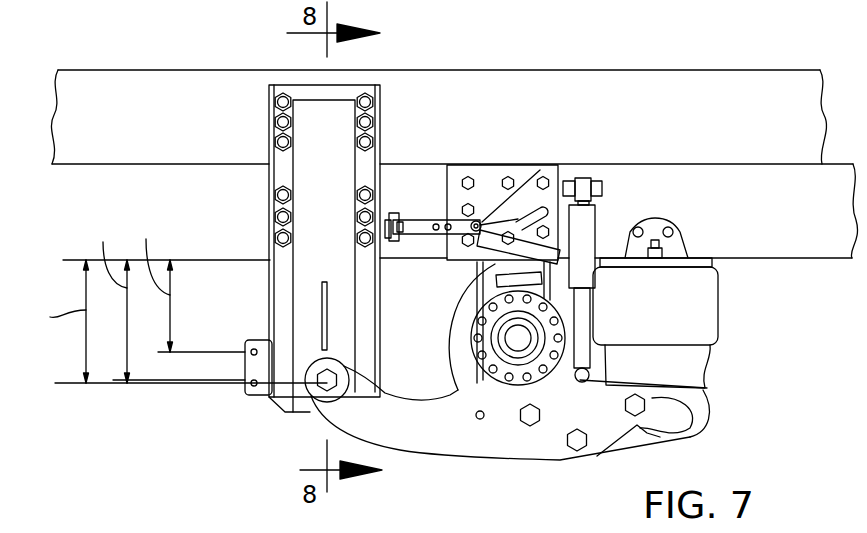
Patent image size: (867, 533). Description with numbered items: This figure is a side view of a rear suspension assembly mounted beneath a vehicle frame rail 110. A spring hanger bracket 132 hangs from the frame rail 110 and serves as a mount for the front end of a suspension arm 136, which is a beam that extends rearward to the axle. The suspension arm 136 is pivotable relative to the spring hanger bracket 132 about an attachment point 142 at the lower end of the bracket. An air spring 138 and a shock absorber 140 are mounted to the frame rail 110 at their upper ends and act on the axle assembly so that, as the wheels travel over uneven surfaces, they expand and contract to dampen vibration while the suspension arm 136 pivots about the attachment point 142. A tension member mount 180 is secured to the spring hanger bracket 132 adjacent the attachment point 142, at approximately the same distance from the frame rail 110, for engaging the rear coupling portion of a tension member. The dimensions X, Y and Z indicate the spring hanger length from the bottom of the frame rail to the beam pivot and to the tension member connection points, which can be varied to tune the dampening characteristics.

The frame rail 110 is at (206, 68).
The spring hanger bracket 132 is at (284, 280).
The suspension arm 136 is at (490, 460).
The air spring 138 is at (697, 303).
The shock absorber 140 is at (587, 218).
The attachment point 142 is at (326, 386).
The tension member mount 180 is at (206, 402).